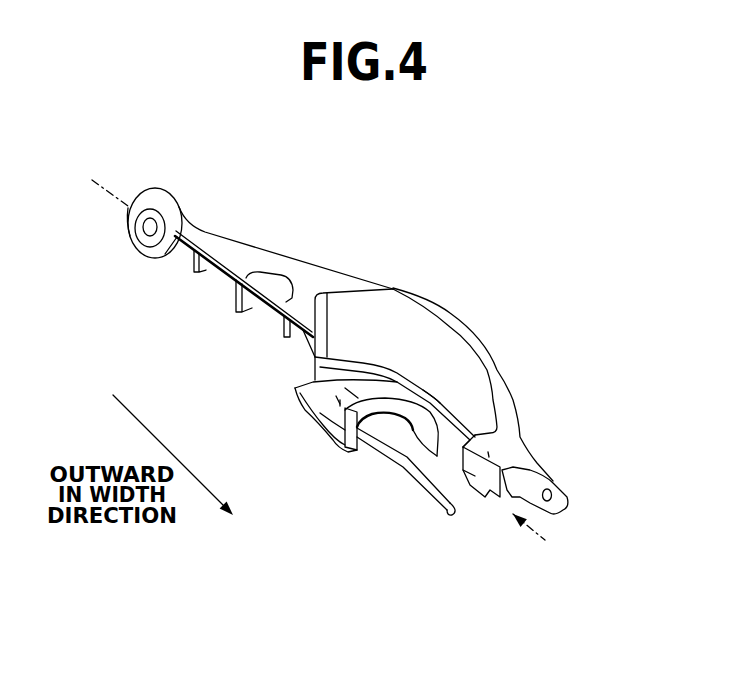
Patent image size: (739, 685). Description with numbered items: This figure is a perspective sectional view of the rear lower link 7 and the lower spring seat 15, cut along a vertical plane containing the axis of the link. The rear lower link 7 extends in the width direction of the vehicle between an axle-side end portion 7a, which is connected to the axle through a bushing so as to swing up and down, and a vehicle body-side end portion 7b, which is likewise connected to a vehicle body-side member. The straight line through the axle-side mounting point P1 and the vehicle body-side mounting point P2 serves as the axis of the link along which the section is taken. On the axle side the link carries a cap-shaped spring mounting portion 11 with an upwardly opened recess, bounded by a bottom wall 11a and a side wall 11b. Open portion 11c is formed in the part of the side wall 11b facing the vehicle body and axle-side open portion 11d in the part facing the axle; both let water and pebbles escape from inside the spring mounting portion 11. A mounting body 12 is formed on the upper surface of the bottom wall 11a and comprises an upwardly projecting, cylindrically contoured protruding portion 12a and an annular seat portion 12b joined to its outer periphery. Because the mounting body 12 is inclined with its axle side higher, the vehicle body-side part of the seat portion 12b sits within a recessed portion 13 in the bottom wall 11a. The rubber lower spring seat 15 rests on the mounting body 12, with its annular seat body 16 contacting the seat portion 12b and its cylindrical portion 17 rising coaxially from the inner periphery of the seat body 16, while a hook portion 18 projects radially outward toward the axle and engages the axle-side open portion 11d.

The rear lower link 7 is at (526, 290).
The axle-side end portion 7a is at (563, 484).
The vehicle body-side end portion 7b is at (158, 195).
The spring mounting portion 11 is at (346, 318).
The bottom wall 11a is at (357, 390).
The side wall 11b is at (428, 330).
The open portion 11c is at (313, 373).
The axle-side open portion 11d is at (463, 490).
The mounting body 12 is at (355, 566).
The protruding portion 12a is at (400, 465).
The annular seat portion 12b is at (420, 507).
The recessed portion 13 is at (330, 408).
The lower spring seat 15 is at (448, 398).
The annular seat body 16 is at (450, 425).
The cylindrical portion 17 is at (328, 435).
The hook portion 18 is at (450, 497).
The axle-side mounting point P1 is at (513, 518).
The vehicle body-side mounting point P2 is at (143, 235).